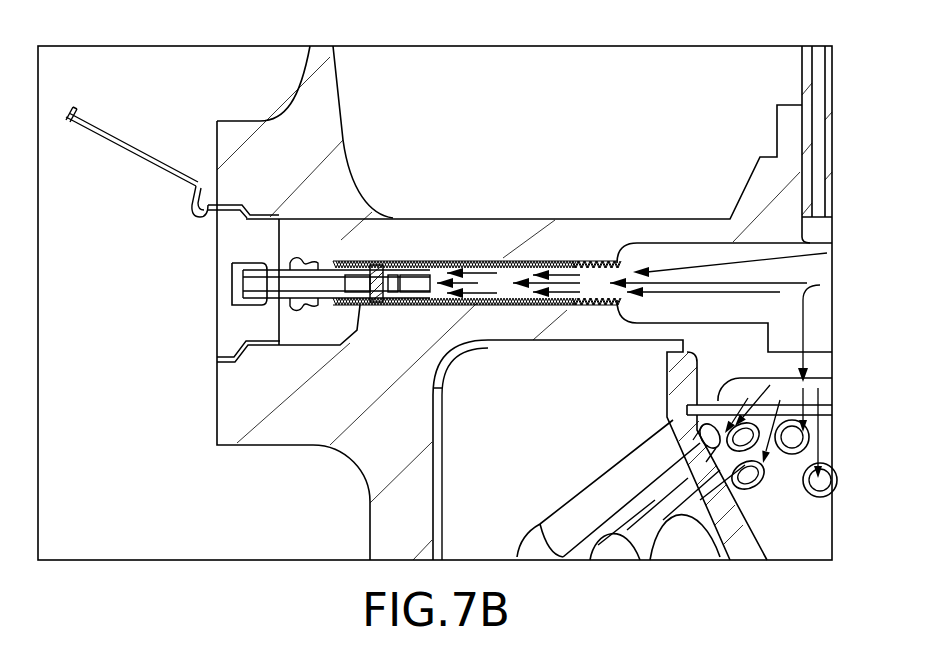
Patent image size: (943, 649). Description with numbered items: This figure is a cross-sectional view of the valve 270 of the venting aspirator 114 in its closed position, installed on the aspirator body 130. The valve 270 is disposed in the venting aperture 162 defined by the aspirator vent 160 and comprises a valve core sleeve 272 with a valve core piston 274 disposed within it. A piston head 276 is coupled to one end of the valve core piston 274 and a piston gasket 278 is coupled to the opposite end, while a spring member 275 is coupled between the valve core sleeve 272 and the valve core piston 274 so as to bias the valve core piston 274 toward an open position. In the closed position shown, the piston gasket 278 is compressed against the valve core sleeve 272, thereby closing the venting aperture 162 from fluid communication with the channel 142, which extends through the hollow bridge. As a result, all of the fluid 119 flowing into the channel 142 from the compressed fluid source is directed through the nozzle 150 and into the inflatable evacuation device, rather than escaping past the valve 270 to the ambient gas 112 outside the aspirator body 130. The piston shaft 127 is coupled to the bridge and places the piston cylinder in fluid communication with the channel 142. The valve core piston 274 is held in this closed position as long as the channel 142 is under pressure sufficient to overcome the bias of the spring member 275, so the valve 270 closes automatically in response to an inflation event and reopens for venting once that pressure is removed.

The ambient gas 112 is at (155, 233).
The venting aspirator 114 is at (669, 83).
The fluid 119 is at (738, 263).
The piston shaft 127 is at (800, 80).
The aspirator body 130 is at (307, 79).
The channel 142 is at (668, 243).
The nozzle 150 is at (667, 412).
The aspirator vent 160 is at (218, 383).
The venting aperture 162 is at (320, 348).
The valve 270 is at (393, 273).
The valve core sleeve 272 is at (330, 263).
The valve core piston 274 is at (305, 280).
The spring member 275 is at (385, 302).
The piston head 276 is at (246, 262).
The piston gasket 278 is at (407, 273).